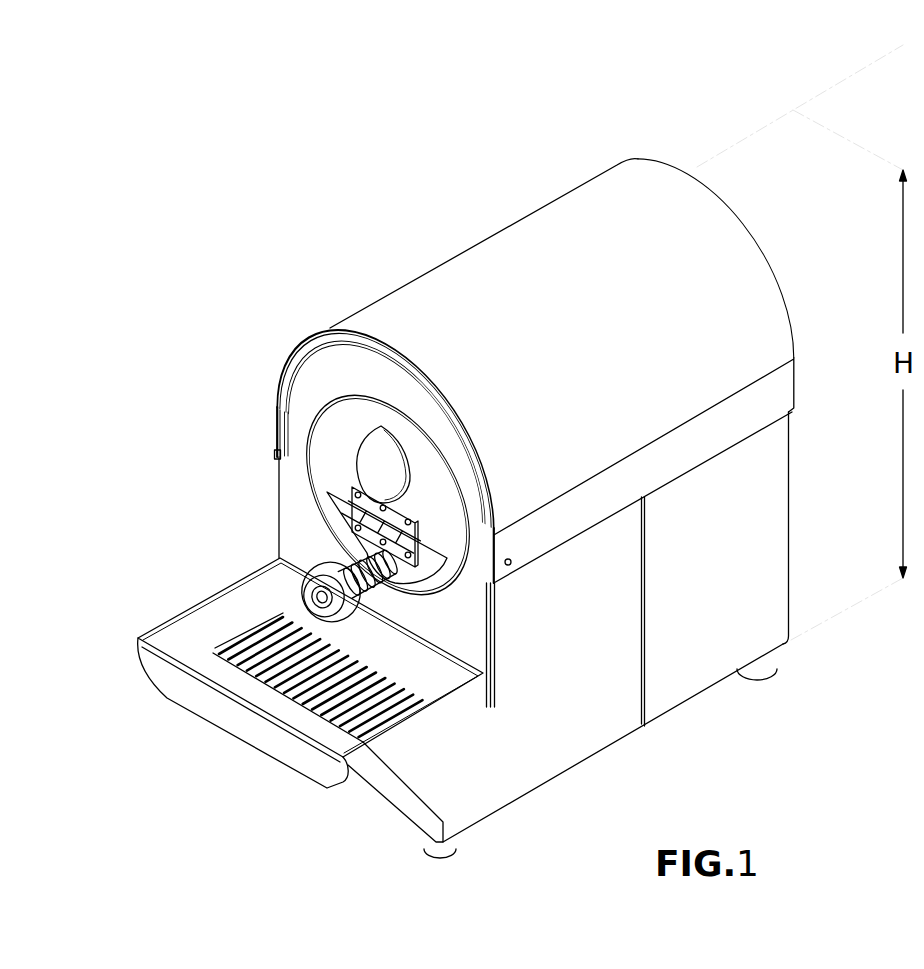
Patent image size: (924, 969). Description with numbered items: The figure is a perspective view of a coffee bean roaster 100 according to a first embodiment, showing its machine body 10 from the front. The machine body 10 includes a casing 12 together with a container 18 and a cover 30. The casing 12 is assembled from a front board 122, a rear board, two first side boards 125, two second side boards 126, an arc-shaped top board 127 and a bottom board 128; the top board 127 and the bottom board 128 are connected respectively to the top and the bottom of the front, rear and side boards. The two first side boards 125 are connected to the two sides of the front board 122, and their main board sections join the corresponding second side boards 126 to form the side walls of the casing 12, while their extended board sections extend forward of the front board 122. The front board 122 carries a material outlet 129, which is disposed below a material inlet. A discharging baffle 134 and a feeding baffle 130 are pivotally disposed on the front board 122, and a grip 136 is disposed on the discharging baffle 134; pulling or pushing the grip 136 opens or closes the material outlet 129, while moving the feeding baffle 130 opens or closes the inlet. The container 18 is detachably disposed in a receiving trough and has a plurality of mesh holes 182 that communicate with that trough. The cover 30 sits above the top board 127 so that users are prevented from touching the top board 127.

The coffee bean roaster 100 is at (545, 187).
The machine body 10 is at (324, 330).
The casing 12 is at (767, 528).
The container 18 is at (138, 638).
The cover 30 is at (520, 272).
The front board 122 is at (297, 422).
The first side boards 125 is at (557, 663).
The second side boards 126 is at (693, 600).
The top board 127 is at (353, 342).
The bottom board 128 is at (637, 733).
The material outlet 129 is at (430, 587).
The feeding baffle 130 is at (377, 465).
The discharging baffle 134 is at (360, 540).
The grip 136 is at (302, 573).
The mesh holes 182 is at (240, 640).